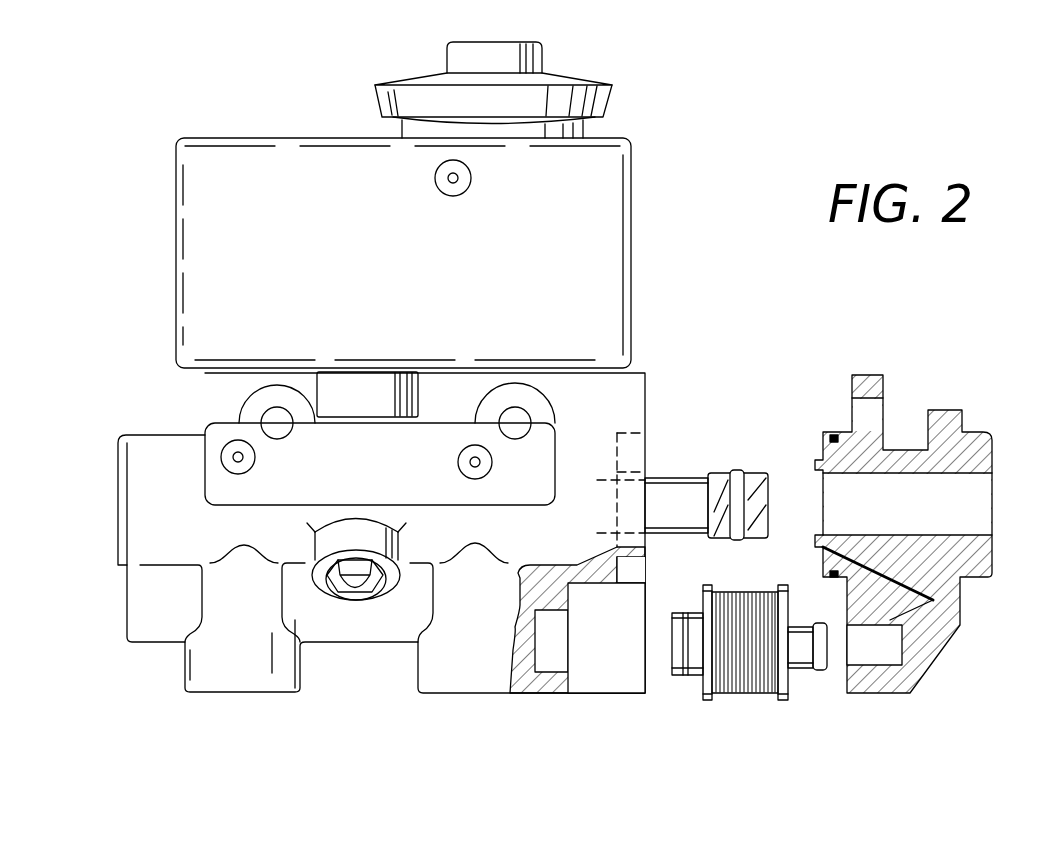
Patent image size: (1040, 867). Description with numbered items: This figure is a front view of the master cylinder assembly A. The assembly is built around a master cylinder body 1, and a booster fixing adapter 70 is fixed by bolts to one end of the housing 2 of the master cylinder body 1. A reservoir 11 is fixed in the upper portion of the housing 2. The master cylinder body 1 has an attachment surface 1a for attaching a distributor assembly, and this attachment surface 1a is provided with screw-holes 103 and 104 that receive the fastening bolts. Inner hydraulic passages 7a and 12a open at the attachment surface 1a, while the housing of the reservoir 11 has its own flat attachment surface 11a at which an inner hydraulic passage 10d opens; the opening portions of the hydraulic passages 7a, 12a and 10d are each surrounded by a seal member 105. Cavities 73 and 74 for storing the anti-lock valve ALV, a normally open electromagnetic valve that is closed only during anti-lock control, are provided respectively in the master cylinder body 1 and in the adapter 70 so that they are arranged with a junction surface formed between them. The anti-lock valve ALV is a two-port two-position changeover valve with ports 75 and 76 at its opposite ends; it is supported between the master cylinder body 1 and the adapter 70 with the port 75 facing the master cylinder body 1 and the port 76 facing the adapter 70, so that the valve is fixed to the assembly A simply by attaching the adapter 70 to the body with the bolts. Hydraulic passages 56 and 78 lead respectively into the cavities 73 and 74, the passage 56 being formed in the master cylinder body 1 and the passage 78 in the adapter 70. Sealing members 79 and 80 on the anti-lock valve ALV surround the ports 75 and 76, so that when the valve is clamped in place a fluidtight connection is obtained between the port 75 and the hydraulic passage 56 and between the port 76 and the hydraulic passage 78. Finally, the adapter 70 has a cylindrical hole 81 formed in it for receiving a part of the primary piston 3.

The master cylinder body 1 is at (497, 696).
The attachment surface 1a is at (437, 493).
The housing 2 is at (437, 678).
The primary piston 3 is at (760, 474).
The inner hydraulic passage 7a is at (479, 466).
The inner hydraulic passage 10d is at (460, 178).
The reservoir 11 is at (617, 203).
The flat attachment surface 11a is at (407, 289).
The inner hydraulic passage 12a is at (242, 462).
The hydraulic passage 56 is at (513, 634).
The booster fixing adapter 70 is at (930, 673).
The cavity 73 is at (603, 672).
The cavity 74 is at (880, 655).
The port 75 is at (663, 655).
The port 76 is at (833, 647).
The hydraulic passage 78 is at (937, 598).
The sealing member 79 is at (687, 673).
The sealing member 80 is at (820, 669).
The cylindrical hole 81 is at (957, 535).
The screw-hole 103 is at (526, 421).
The screw-hole 104 is at (282, 432).
The seal member 105 is at (462, 192).
The master cylinder assembly A is at (715, 262).
The anti-lock valve ALV is at (745, 658).